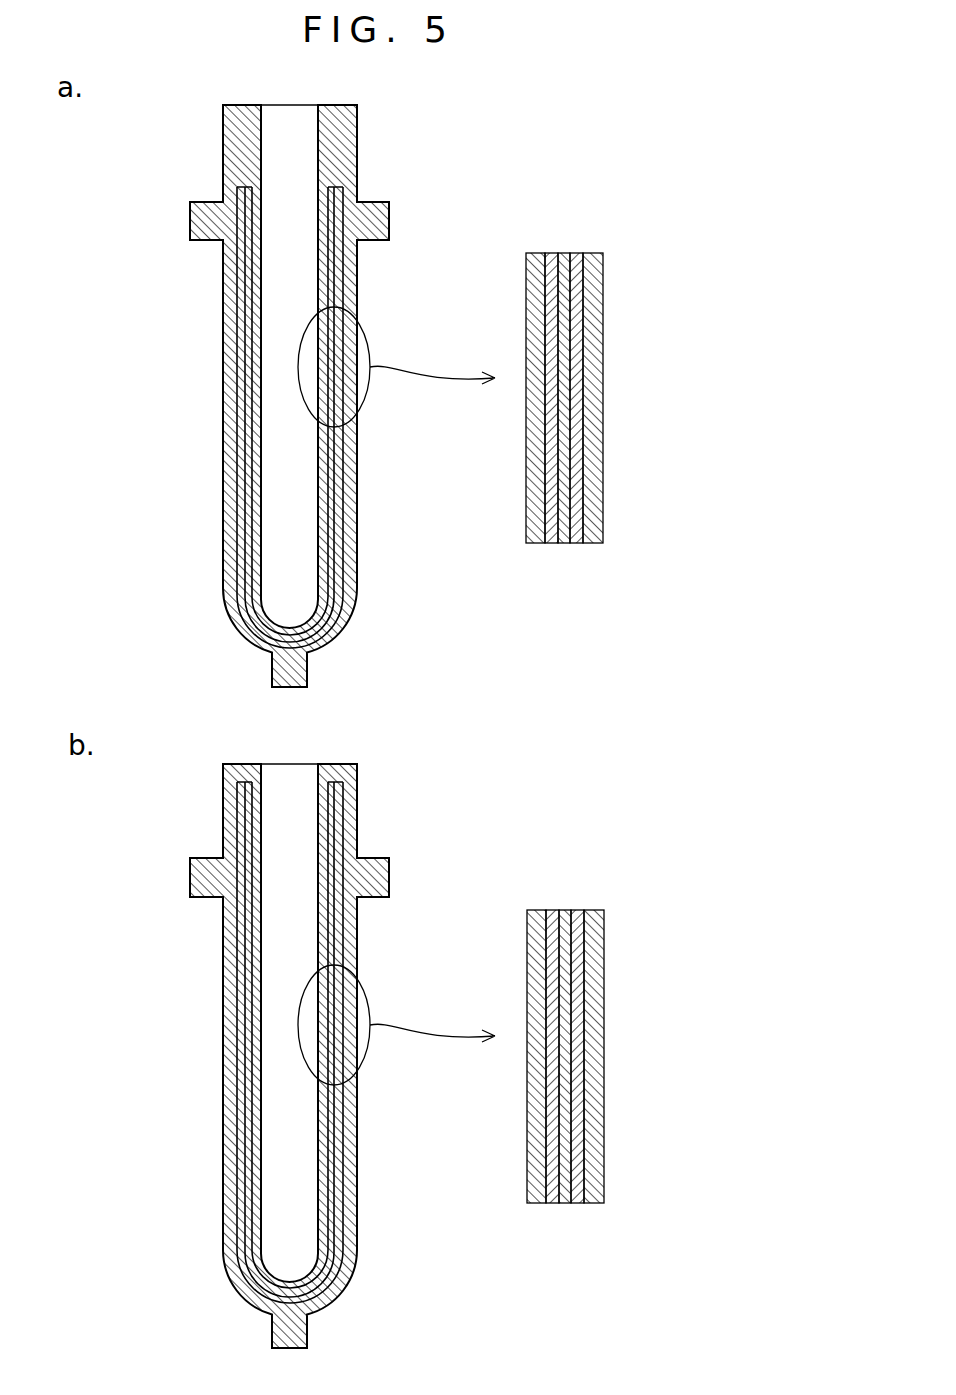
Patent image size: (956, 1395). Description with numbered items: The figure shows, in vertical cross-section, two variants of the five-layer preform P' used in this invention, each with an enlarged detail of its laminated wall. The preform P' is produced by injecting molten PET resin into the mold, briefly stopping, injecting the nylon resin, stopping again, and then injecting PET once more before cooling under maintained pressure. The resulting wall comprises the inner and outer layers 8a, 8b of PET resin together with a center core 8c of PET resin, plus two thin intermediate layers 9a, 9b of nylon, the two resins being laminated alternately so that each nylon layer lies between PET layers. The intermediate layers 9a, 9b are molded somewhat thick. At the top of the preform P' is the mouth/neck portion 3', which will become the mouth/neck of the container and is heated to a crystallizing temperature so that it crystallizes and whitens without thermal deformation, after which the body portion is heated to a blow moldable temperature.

The mouth/neck portion 3' is at (264, 726).
The 5-layer preform P' is at (234, 745).
The inner layer 8a is at (527, 527).
The outer layer 8b is at (603, 528).
The center core 8c is at (562, 543).
The intermediate layer 9a is at (550, 253).
The intermediate layer 9b is at (574, 253).